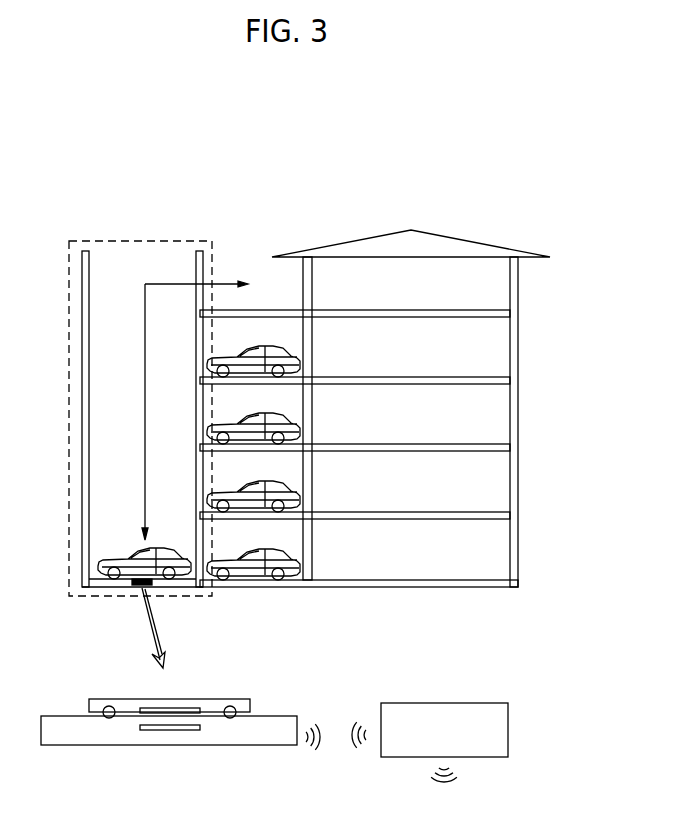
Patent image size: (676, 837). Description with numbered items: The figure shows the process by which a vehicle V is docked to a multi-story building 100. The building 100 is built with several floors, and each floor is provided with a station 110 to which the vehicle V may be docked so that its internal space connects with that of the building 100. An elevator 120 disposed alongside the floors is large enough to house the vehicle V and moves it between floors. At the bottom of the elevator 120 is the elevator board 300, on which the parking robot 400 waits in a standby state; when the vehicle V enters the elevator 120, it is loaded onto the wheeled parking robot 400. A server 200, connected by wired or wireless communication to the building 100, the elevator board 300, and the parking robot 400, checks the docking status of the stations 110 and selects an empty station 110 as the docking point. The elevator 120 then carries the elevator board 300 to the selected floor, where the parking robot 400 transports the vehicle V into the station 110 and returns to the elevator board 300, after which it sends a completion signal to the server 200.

The building 100 is at (480, 229).
The station 110 is at (272, 312).
The elevator 120 is at (125, 240).
The vehicle V is at (235, 572).
The parking robot 400 is at (116, 698).
The elevator board 300 is at (80, 746).
The server 200 is at (444, 702).